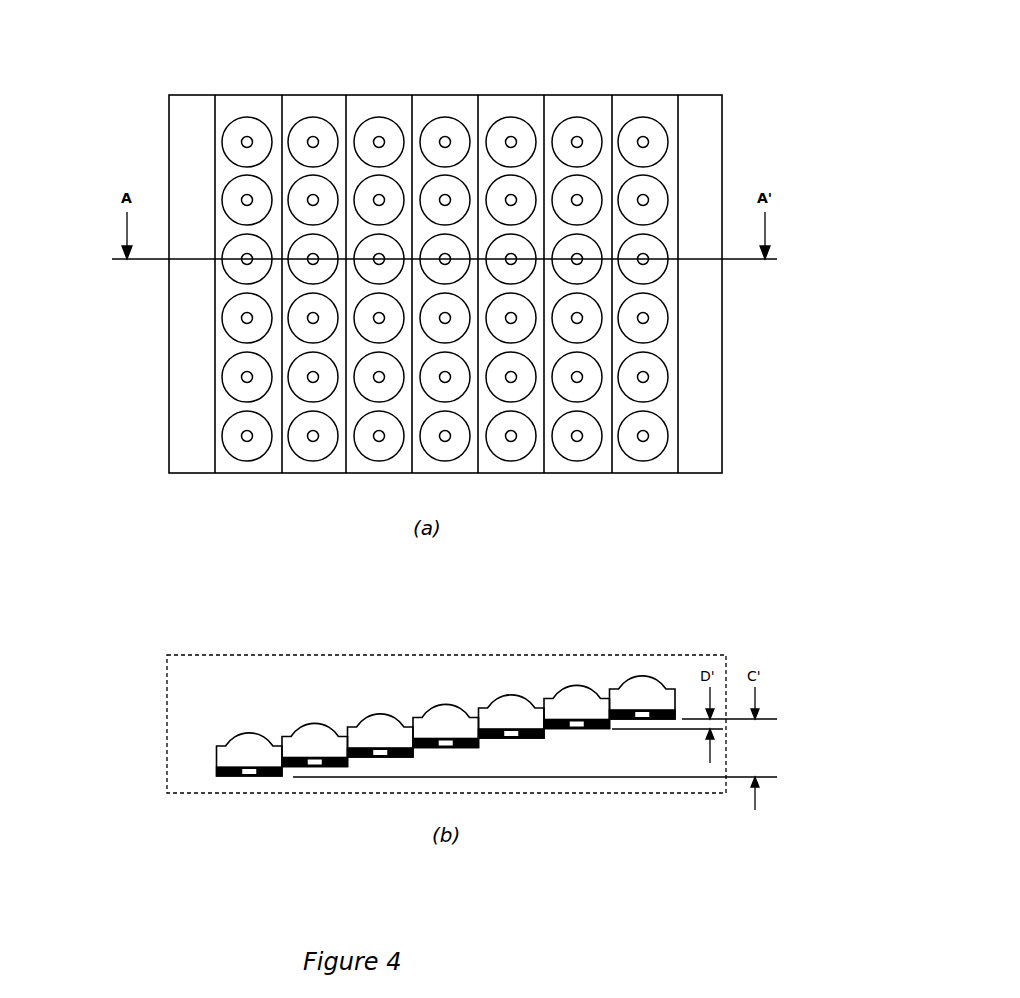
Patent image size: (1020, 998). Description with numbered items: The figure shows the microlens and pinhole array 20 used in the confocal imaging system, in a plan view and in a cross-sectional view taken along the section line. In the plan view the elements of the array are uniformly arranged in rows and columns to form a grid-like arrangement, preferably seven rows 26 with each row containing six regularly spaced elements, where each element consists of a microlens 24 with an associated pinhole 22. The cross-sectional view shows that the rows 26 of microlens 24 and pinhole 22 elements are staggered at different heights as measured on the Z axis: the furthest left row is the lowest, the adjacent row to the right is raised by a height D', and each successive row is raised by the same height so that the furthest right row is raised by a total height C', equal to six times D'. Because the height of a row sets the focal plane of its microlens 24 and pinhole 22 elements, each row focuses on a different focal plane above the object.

The microlens and pinhole array 20 is at (257, 653).
The pinhole 22 is at (242, 262).
The microlens 24 is at (235, 188).
The rows 26 is at (510, 95).